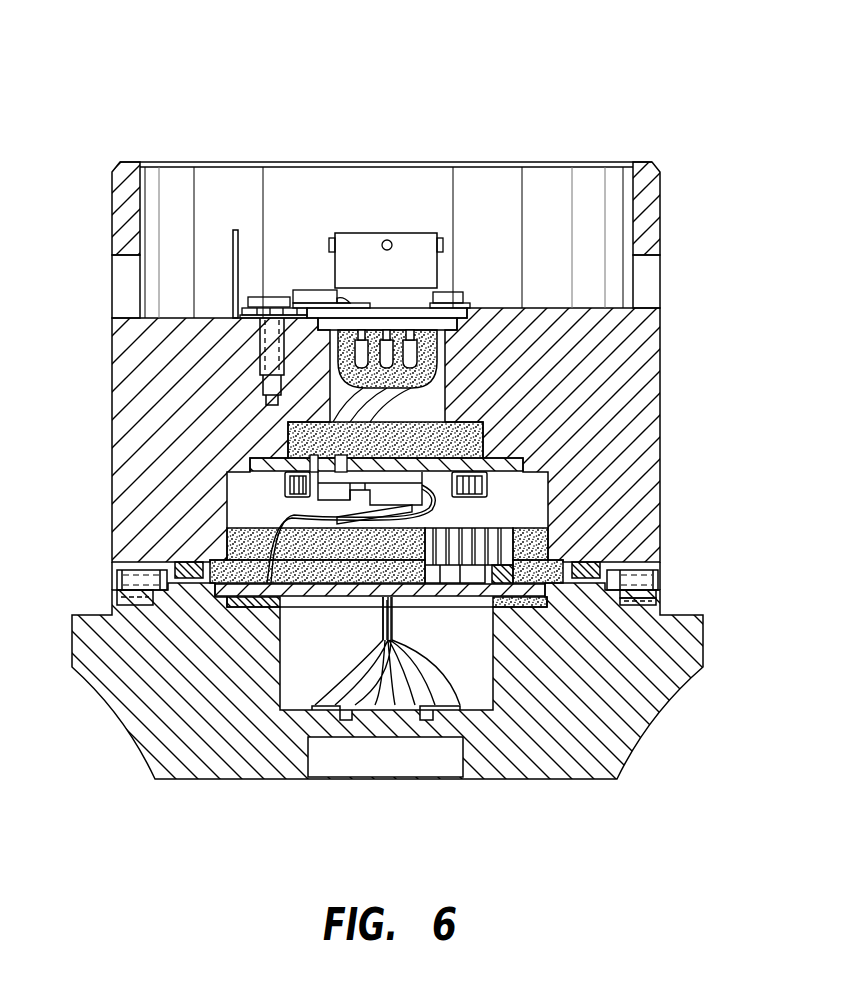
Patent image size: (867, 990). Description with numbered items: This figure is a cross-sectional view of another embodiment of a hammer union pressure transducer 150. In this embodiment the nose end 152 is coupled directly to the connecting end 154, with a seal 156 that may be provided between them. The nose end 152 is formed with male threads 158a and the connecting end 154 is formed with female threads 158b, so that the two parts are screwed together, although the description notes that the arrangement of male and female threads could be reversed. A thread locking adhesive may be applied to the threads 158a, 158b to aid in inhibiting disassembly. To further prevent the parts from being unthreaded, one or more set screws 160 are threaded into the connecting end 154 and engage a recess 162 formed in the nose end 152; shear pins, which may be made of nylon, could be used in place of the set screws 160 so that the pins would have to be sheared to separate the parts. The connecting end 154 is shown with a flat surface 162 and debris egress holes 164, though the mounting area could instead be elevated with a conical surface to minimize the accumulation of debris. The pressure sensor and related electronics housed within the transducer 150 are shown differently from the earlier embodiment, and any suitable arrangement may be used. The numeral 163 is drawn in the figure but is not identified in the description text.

The hammer union pressure transducer 150 is at (546, 75).
The nose end 152 is at (640, 755).
The connecting end 154 is at (660, 333).
The seal 156 is at (193, 560).
The male threads 158a is at (623, 597).
The female threads 158b is at (623, 599).
The set screws 160 is at (117, 578).
The recess 162 is at (557, 307).
The retainer 163 is at (160, 593).
The debris egress holes 164 is at (112, 290).